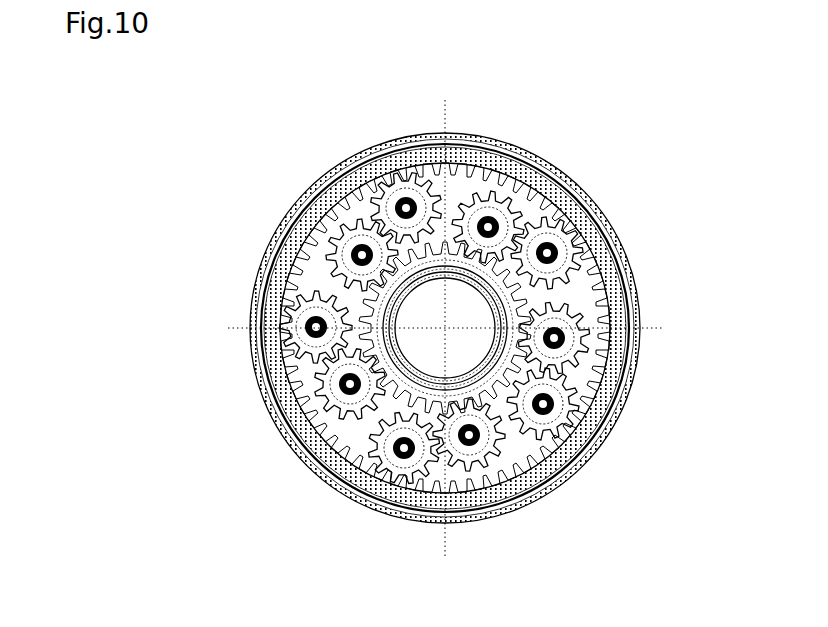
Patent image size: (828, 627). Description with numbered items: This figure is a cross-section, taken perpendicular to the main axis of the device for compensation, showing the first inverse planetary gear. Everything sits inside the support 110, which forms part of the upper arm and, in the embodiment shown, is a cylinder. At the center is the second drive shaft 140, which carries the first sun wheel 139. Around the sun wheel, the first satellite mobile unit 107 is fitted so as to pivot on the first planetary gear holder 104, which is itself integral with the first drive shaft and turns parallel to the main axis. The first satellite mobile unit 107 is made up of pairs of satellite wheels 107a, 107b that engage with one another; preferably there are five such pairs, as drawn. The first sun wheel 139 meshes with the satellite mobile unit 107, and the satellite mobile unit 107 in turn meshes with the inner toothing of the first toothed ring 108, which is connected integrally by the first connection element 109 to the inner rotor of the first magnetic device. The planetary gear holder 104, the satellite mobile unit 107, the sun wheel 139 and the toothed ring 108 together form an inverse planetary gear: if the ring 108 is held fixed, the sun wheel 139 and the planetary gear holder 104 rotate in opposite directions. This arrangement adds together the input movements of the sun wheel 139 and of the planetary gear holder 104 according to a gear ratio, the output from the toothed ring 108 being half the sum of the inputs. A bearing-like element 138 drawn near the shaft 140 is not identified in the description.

The first planetary gear holder 104 is at (512, 438).
The first satellite mobile unit 107 is at (432, 294).
The satellite wheel 107a is at (383, 183).
The satellite wheel 107b is at (338, 232).
The first toothed ring 108 is at (553, 193).
The first connection element 109 is at (521, 160).
The support 110 is at (413, 140).
The bearing 138 is at (402, 373).
The first sun wheel 139 is at (360, 303).
The second drive shaft 140 is at (485, 362).